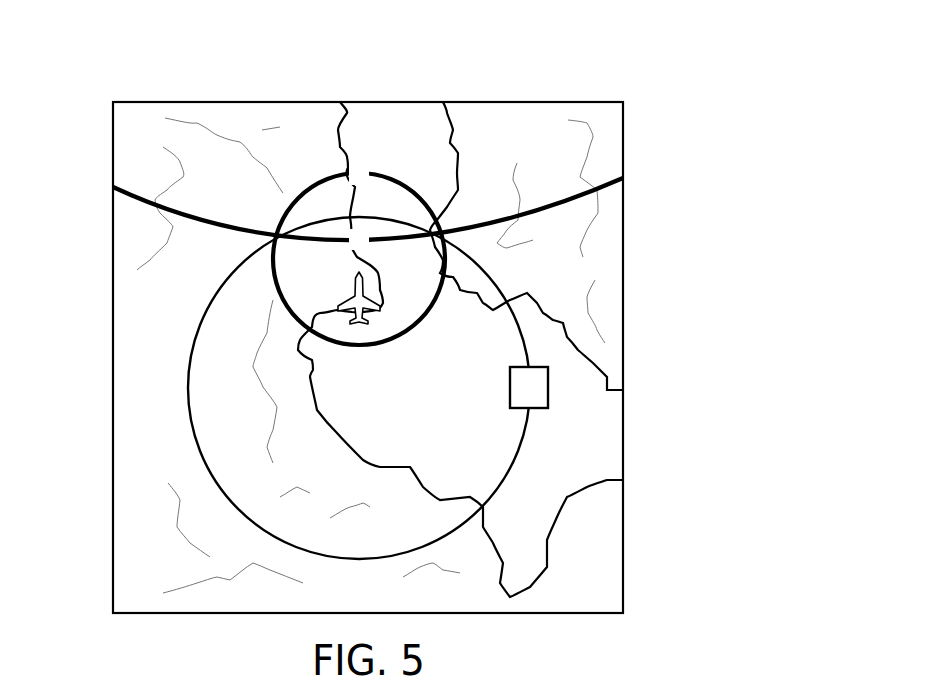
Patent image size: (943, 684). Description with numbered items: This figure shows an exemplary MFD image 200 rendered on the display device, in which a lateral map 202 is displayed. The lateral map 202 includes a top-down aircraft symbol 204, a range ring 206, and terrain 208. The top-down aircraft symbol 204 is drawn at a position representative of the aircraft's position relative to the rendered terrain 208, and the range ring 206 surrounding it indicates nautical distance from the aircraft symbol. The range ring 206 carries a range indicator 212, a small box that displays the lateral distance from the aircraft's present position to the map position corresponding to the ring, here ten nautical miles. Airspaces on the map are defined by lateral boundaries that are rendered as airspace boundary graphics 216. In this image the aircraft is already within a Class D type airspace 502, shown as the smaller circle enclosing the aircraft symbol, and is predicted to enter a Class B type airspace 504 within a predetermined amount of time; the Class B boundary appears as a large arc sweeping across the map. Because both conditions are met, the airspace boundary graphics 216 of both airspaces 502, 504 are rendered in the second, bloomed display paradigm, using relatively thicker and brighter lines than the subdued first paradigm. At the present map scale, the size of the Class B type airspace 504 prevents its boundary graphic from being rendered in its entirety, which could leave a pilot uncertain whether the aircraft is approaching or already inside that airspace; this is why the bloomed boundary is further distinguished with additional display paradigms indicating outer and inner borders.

The MFD image 200 is at (495, 86).
The lateral map 202 is at (623, 165).
The top-down aircraft symbol 204 is at (357, 292).
The range ring 206 is at (198, 338).
The terrain 208 is at (607, 255).
The range indicator 212 is at (539, 409).
The airspace boundary graphics 216 is at (390, 176).
The Class D type airspace 502 is at (308, 167).
The Class B type airspace 504 is at (151, 214).